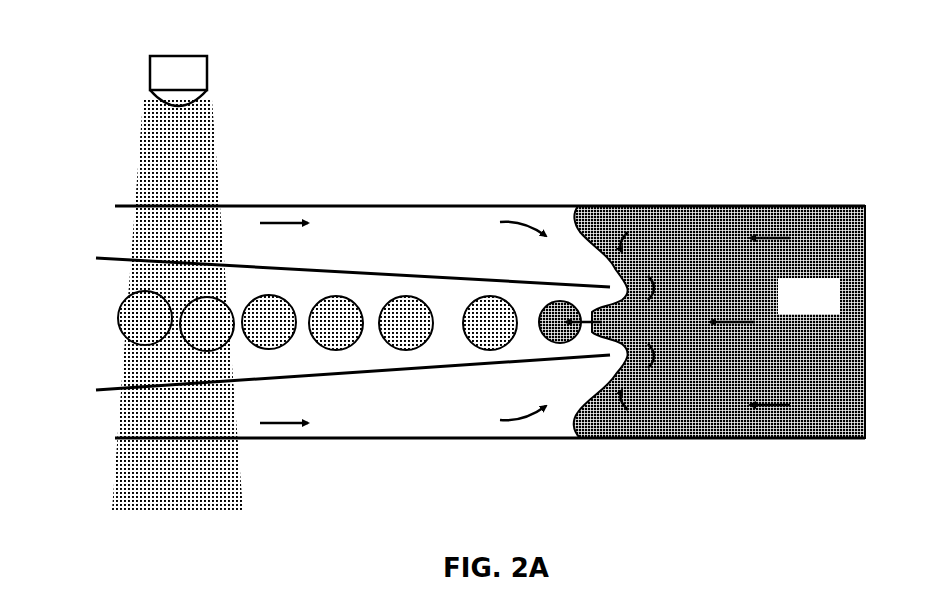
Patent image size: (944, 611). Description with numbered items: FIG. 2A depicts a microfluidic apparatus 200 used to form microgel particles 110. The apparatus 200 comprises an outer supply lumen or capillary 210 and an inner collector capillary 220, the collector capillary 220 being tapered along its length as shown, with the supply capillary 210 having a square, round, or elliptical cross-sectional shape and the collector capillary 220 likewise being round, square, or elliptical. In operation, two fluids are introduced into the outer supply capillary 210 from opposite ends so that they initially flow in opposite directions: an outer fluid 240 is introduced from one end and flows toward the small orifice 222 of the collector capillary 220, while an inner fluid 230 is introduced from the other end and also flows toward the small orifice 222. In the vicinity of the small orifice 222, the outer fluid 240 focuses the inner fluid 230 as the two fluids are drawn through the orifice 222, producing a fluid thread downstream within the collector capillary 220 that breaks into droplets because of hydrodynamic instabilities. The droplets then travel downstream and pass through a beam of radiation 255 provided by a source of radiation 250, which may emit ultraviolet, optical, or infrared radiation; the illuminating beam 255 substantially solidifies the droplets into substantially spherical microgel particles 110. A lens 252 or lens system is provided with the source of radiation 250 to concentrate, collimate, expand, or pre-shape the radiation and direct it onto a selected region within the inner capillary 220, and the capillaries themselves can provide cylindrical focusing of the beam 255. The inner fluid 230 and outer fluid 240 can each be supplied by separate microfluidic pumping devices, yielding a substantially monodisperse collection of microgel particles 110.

The microfluidic apparatus 200 is at (636, 56).
The outer supply capillary 210 is at (430, 205).
The inner collector capillary 220 is at (112, 258).
The small orifice 222 is at (582, 362).
The inner fluid 230 is at (828, 307).
The outer fluid 240 is at (446, 254).
The microgel particles 110 is at (196, 342).
The source of radiation 250 is at (207, 72).
The lens 252 is at (152, 100).
The beam of radiation 255 is at (205, 157).